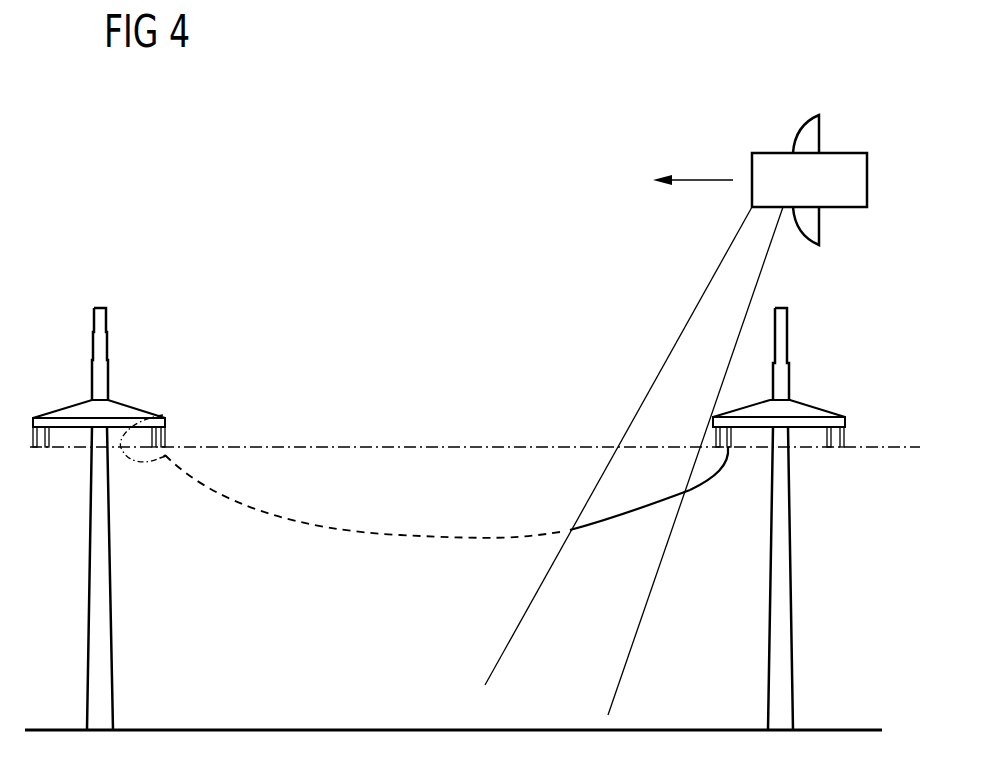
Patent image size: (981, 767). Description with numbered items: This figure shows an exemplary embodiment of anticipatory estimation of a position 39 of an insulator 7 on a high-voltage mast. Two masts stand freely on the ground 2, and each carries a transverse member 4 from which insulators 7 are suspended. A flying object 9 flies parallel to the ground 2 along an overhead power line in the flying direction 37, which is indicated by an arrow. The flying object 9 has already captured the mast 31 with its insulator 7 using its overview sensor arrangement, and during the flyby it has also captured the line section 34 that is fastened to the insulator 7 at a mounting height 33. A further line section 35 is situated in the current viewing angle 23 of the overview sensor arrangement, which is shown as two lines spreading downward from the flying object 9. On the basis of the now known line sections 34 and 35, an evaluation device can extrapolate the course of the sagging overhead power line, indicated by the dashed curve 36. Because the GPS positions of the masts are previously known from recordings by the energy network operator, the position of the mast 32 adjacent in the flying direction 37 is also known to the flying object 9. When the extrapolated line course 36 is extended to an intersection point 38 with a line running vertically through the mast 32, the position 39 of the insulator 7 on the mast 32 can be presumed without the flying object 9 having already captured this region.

The ground 2 is at (858, 730).
The transverse member 4 is at (130, 405).
The insulator 7 is at (167, 436).
The flying object 9 is at (845, 153).
The viewing angle 23 is at (717, 268).
The mast 31 is at (793, 618).
The mast 32 is at (113, 627).
The mounting height 33 is at (910, 447).
The line section 34 is at (708, 478).
The line section 35 is at (610, 522).
The extrapolated line course 36 is at (377, 535).
The flying direction 37 is at (692, 180).
The intersection point 38 is at (143, 452).
The position of the insulator 39 is at (167, 460).